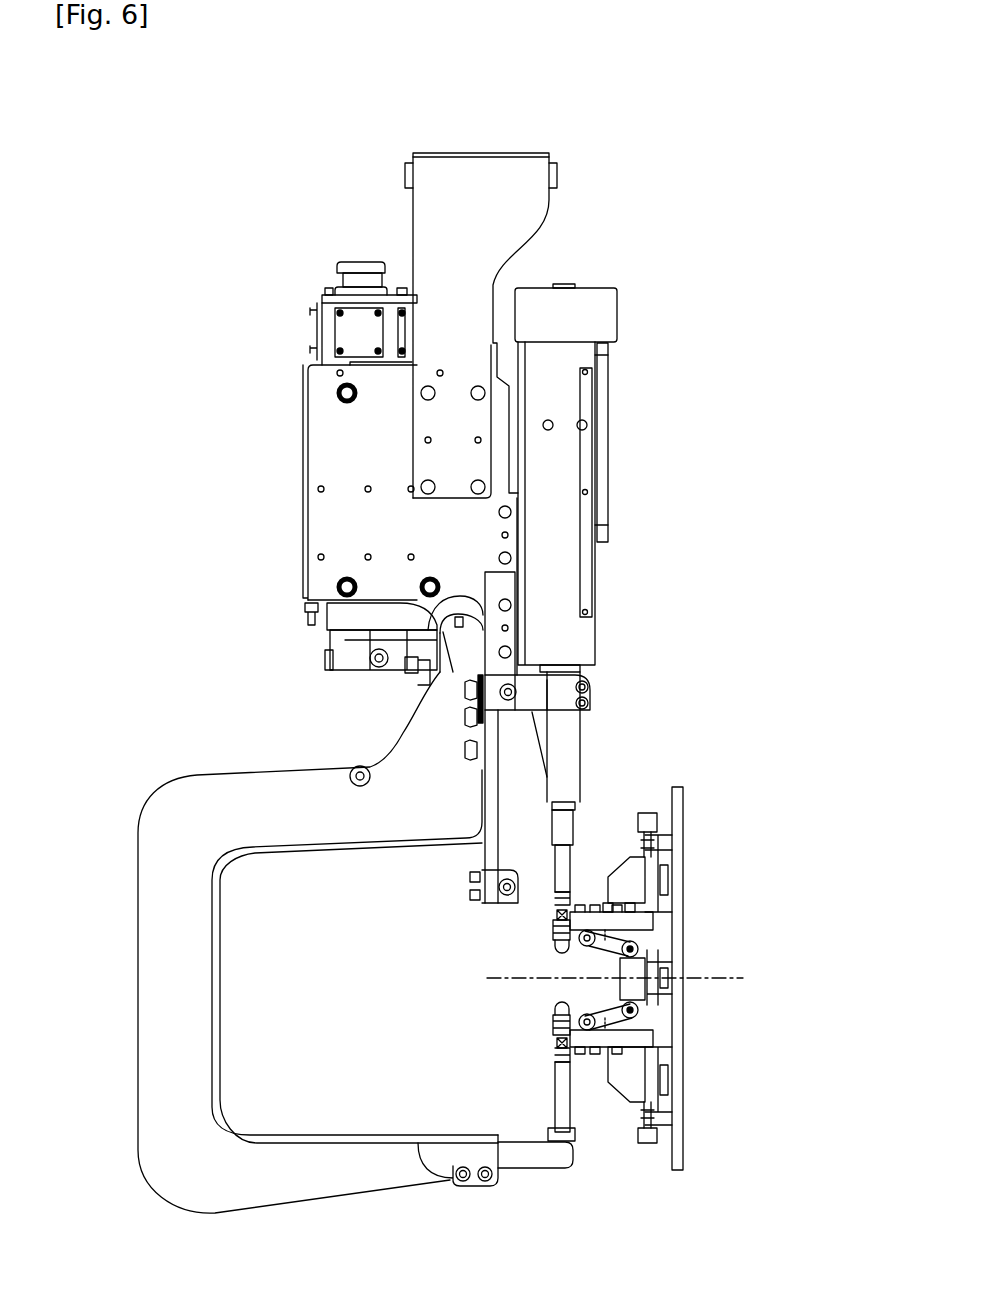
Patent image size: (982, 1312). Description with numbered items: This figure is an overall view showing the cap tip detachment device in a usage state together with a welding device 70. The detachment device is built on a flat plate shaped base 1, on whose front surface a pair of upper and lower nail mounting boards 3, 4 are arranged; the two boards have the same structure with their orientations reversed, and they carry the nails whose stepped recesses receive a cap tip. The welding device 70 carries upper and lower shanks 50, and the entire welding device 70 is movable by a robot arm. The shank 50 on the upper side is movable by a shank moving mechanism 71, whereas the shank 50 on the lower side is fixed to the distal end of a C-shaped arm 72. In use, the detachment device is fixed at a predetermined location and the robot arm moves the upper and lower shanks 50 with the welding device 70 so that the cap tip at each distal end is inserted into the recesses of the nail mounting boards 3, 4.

The base 1 is at (683, 847).
The nail mounting board 3 is at (622, 870).
The nail mounting board 4 is at (620, 1083).
The shank 50 is at (555, 880).
The welding device 70 is at (322, 437).
The shank moving mechanism 71 is at (567, 565).
The C-shaped arm 72 is at (195, 915).